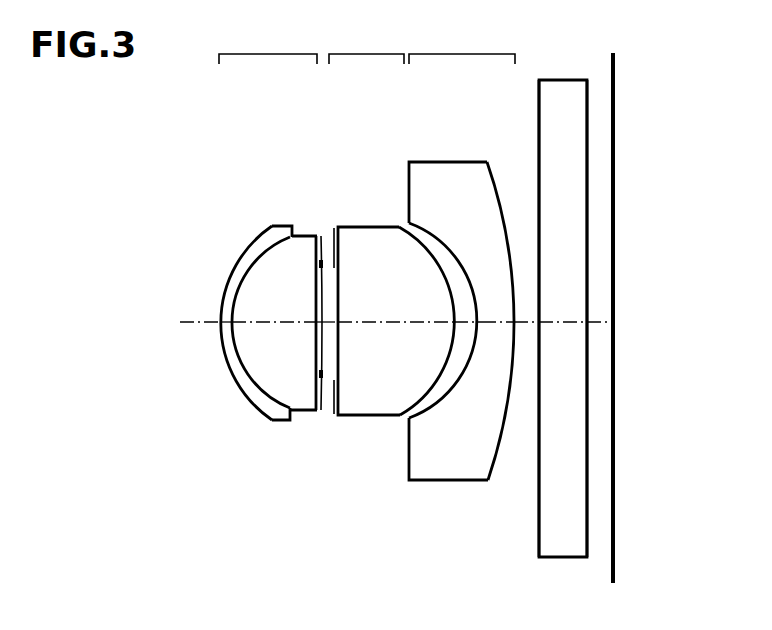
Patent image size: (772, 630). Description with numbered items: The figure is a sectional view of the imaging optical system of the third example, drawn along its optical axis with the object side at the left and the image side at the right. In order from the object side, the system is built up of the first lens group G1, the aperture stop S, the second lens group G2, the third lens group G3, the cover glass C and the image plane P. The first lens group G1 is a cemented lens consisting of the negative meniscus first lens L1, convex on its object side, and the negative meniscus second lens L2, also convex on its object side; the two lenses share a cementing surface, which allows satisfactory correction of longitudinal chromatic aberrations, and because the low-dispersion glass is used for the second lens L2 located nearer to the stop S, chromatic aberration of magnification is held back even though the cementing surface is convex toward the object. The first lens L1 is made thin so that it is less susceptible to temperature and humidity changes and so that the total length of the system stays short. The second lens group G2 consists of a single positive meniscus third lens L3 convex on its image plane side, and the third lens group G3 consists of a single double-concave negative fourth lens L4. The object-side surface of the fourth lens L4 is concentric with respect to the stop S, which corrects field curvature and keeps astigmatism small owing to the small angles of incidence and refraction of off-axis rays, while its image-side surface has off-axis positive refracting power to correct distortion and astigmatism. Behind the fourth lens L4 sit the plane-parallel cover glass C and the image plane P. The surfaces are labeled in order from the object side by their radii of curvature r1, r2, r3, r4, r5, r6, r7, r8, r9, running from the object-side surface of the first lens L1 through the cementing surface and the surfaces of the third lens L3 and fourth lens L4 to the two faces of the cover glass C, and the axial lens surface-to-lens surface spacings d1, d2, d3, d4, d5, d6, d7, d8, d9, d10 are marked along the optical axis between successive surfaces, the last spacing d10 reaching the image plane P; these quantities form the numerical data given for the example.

The first lens group G1 is at (268, 44).
The second lens group G2 is at (366, 44).
The third lens group G3 is at (462, 44).
The first lens L1 is at (253, 286).
The second lens L2 is at (320, 278).
The third lens L3 is at (396, 281).
The fourth lens L4 is at (460, 289).
The aperture stop S is at (335, 268).
The cover glass C is at (560, 285).
The image plane P is at (616, 162).
The radius of curvature of first lens surface r1 is at (246, 272).
The radius of curvature of second lens surface r2 is at (268, 238).
The radius of curvature of third lens surface r3 is at (318, 266).
The radius of curvature of fourth lens surface r4 is at (338, 287).
The radius of curvature of fifth lens surface r5 is at (417, 250).
The radius of curvature of sixth lens surface r6 is at (429, 232).
The radius of curvature of seventh lens surface r7 is at (507, 193).
The radius of curvature of eighth lens surface r8 is at (538, 108).
The radius of curvature of ninth lens surface r9 is at (588, 108).
The lens surface-to-lens surface spacing d1 is at (225, 342).
The lens surface-to-lens surface spacing d2 is at (274, 341).
The lens surface-to-lens surface spacing d3 is at (320, 412).
The lens surface-to-lens surface spacing d4 is at (332, 412).
The lens surface-to-lens surface spacing d5 is at (396, 341).
The lens surface-to-lens surface spacing d6 is at (468, 341).
The lens surface-to-lens surface spacing d7 is at (498, 341).
The lens surface-to-lens surface spacing d8 is at (525, 323).
The lens surface-to-lens surface spacing d9 is at (563, 341).
The lens surface-to-lens surface spacing d10 is at (600, 323).